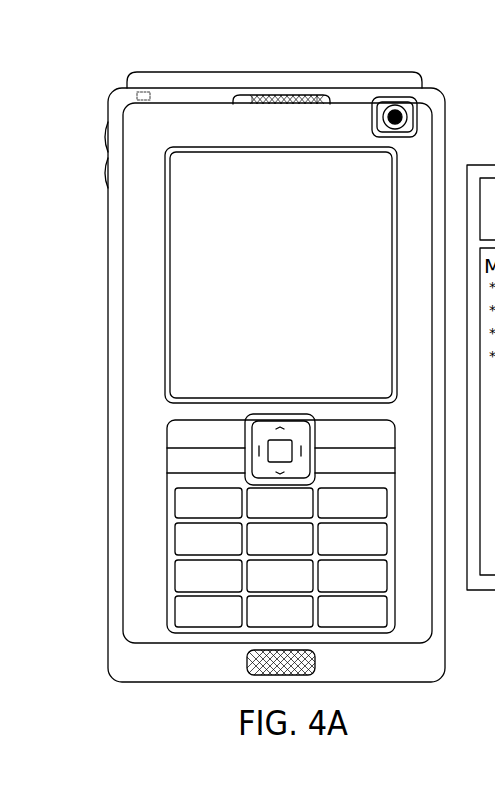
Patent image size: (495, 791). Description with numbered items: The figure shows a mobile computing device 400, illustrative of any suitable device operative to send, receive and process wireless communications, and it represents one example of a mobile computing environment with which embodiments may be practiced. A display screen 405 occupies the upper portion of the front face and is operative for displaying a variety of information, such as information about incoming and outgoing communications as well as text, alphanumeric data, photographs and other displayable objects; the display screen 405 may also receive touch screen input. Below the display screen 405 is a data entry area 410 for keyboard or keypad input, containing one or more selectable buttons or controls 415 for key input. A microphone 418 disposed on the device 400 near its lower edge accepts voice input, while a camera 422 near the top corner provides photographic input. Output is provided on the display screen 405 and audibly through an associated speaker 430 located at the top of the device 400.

The mobile computing device 400 is at (104, 91).
The display screen 405 is at (195, 261).
The data entry area 410 is at (168, 455).
The selectable buttons or controls 415 is at (185, 537).
The microphone 418 is at (247, 662).
The camera 422 is at (401, 109).
The speaker 430 is at (287, 96).